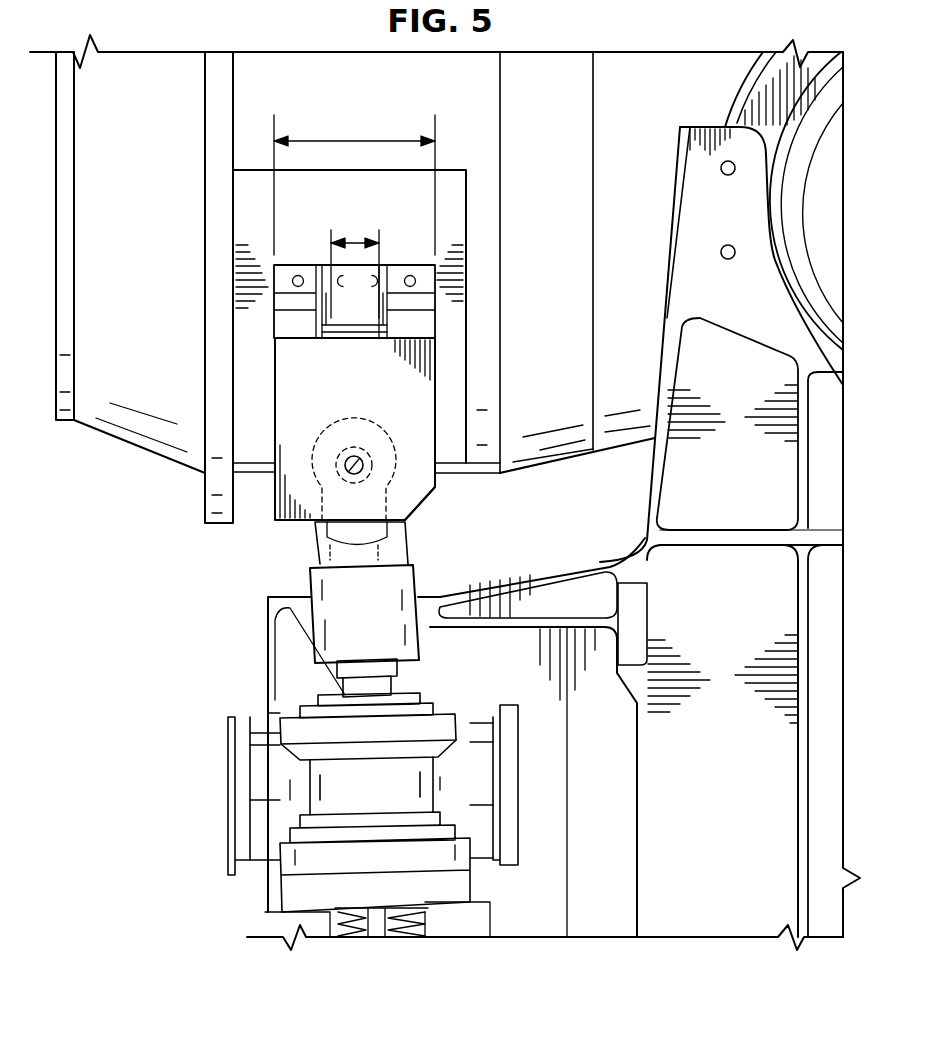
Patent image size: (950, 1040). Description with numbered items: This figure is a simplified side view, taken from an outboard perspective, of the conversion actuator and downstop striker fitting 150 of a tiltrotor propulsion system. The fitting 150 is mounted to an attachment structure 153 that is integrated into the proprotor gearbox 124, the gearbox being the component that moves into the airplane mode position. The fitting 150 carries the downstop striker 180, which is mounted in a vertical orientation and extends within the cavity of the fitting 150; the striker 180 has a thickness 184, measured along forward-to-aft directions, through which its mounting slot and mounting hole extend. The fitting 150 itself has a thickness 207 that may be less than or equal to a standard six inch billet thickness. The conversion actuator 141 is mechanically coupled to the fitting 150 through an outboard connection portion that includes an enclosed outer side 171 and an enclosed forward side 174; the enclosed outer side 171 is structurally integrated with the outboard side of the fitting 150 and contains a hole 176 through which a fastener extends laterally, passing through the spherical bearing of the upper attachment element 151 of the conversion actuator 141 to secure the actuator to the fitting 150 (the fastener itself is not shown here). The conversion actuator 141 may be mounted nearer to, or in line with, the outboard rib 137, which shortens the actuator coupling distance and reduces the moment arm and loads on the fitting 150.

The proprotor gearbox 124 is at (520, 130).
The outboard rib 137 is at (269, 657).
The conversion actuator 141 is at (207, 803).
The conversion actuator and downstop striker fitting 150 is at (428, 444).
The upper attachment element 151 is at (310, 582).
The attachment structure 153 is at (247, 197).
The enclosed outer side 171 is at (420, 488).
The enclosed forward side 174 is at (272, 368).
The hole 176 is at (351, 445).
The downstop striker 180 is at (358, 331).
The thickness 184 is at (357, 241).
The thickness 207 is at (343, 130).